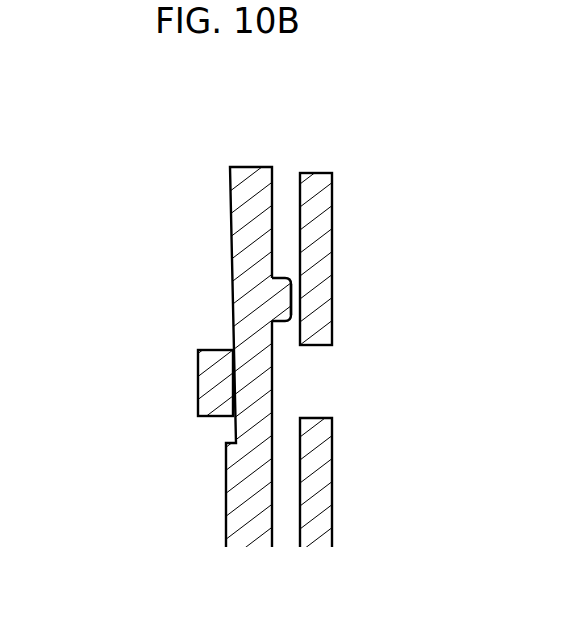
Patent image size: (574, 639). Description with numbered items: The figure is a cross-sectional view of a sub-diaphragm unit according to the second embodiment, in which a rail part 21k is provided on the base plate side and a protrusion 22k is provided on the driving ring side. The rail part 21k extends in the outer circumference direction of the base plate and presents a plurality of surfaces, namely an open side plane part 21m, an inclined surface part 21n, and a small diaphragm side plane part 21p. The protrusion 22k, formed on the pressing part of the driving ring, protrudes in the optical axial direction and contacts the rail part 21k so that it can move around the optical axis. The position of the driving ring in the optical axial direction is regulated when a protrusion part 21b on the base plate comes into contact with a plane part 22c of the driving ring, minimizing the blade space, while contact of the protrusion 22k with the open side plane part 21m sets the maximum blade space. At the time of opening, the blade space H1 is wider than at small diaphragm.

The blade space at the time of opening H1 is at (222, 78).
The rail part 21k is at (113, 197).
The small diaphragm side plane part 21p is at (231, 182).
The inclined surface part 21n is at (233, 301).
The open side plane part 21m is at (232, 428).
The plane part 22c is at (301, 259).
The protrusion part 21b is at (292, 304).
The protrusion 22k is at (236, 380).